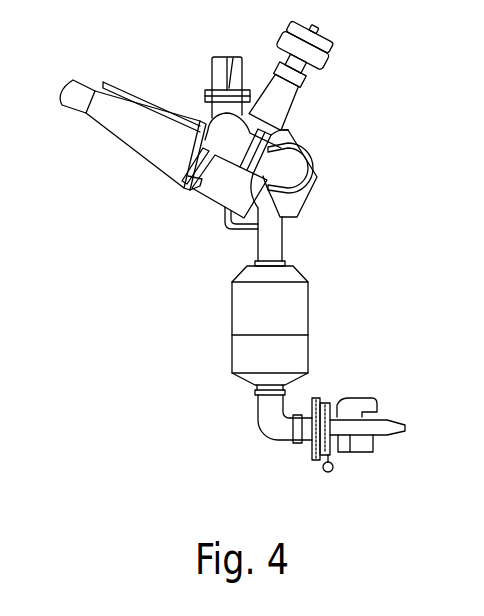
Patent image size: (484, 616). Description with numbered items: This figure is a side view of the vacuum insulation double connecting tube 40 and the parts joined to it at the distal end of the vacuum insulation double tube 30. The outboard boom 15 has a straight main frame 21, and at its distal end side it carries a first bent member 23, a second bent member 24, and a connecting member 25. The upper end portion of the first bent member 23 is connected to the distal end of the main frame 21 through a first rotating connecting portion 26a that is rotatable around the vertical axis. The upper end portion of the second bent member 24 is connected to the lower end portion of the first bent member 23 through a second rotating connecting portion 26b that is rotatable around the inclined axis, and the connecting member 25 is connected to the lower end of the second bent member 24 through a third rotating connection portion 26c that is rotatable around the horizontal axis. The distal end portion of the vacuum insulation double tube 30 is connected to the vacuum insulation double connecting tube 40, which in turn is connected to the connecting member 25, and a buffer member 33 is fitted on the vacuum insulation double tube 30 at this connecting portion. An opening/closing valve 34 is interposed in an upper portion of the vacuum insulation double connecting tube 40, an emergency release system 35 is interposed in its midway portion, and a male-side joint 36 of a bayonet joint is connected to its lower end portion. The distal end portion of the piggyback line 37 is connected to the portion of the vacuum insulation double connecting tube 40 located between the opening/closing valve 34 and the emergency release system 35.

The outboard boom 15 is at (175, 37).
The main frame 21 is at (212, 72).
The first bent member 23 is at (238, 137).
The second bent member 24 is at (280, 162).
The connecting member 25 is at (306, 200).
The first rotating connecting portion 26a is at (232, 58).
The second rotating connecting portion 26b is at (288, 127).
The third rotating connection portion 26c is at (314, 177).
The vacuum insulation double tube 30 is at (72, 107).
The buffer member 33 is at (123, 135).
The opening/closing valve 34 is at (207, 196).
The emergency release system 35 is at (229, 343).
The male-side joint 36 is at (358, 452).
The piggyback line 37 is at (115, 82).
The vacuum insulation double connecting tube 40 is at (283, 247).